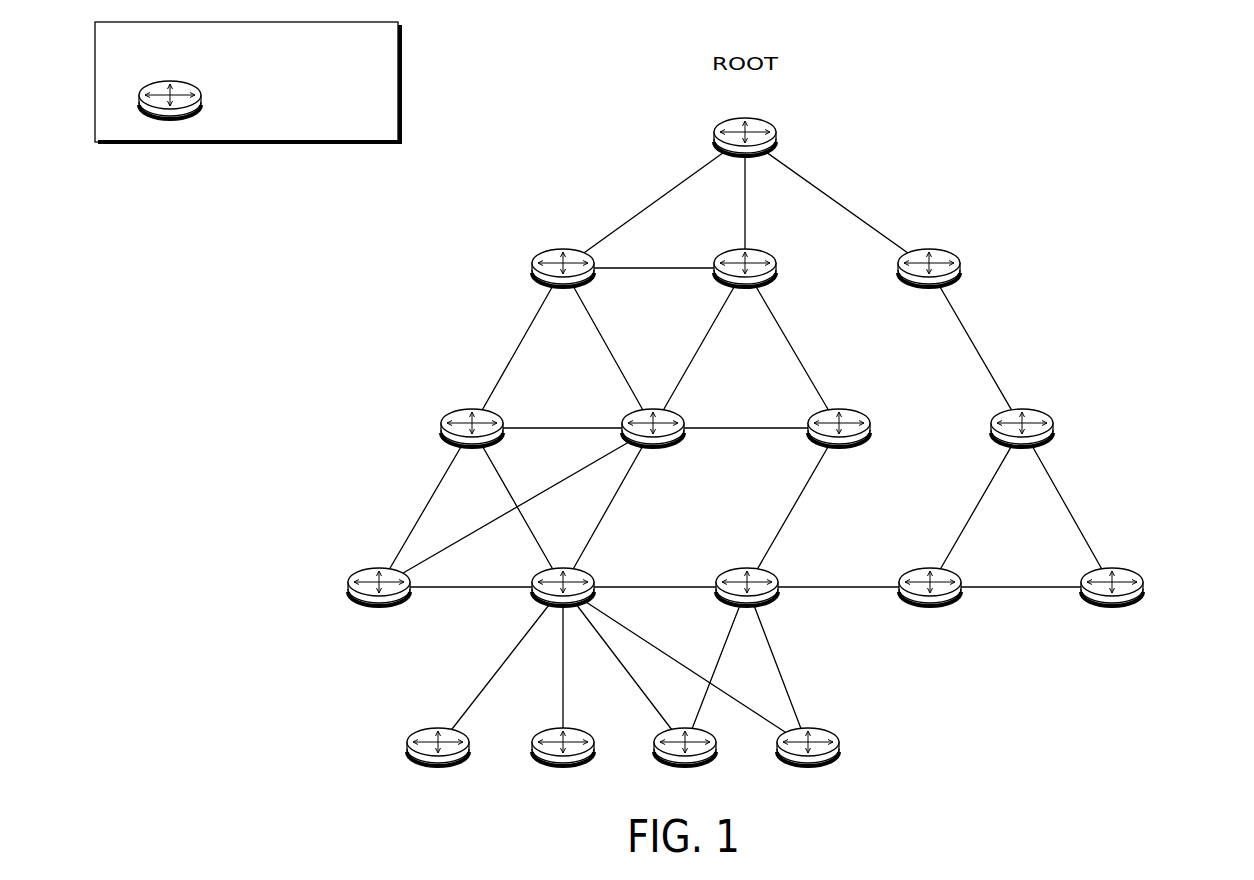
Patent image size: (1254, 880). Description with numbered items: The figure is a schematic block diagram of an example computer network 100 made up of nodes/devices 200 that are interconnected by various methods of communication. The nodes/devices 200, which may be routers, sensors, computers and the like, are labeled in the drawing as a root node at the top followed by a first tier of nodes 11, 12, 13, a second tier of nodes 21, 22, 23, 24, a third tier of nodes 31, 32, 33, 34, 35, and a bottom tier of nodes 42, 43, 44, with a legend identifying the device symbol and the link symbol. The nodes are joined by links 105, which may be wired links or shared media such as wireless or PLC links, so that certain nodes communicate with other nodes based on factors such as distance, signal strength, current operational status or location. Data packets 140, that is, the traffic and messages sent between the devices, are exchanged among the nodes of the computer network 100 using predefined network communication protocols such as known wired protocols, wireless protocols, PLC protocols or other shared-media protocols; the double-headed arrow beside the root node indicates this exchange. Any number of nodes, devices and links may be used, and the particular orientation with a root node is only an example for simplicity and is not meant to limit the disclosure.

The computer network 100 is at (1176, 74).
The links 105 is at (130, 51).
The nodes/devices 200 is at (246, 100).
The data packets 140 is at (943, 184).
The node 11 is at (563, 288).
The node 12 is at (745, 288).
The node 13 is at (929, 288).
The node 21 is at (472, 447).
The node 22 is at (653, 447).
The node 23 is at (839, 447).
The node 24 is at (1022, 447).
The node 31 is at (379, 605).
The node 32 is at (563, 605).
The node 33 is at (747, 605).
The node 34 is at (930, 605).
The node 35 is at (1112, 605).
The node 42 is at (500, 765).
The node 43 is at (685, 765).
The node 44 is at (808, 765).